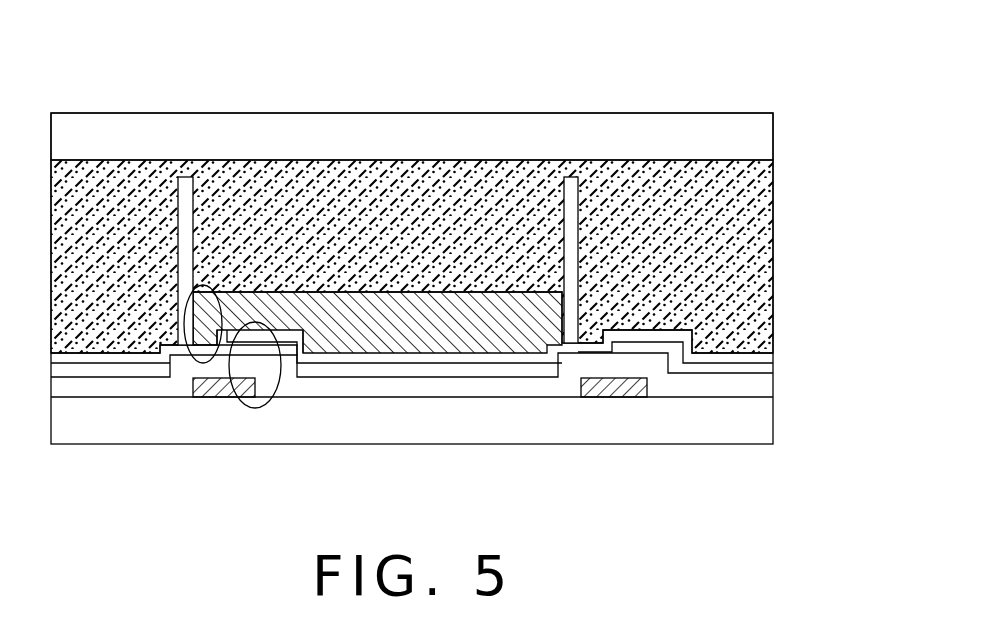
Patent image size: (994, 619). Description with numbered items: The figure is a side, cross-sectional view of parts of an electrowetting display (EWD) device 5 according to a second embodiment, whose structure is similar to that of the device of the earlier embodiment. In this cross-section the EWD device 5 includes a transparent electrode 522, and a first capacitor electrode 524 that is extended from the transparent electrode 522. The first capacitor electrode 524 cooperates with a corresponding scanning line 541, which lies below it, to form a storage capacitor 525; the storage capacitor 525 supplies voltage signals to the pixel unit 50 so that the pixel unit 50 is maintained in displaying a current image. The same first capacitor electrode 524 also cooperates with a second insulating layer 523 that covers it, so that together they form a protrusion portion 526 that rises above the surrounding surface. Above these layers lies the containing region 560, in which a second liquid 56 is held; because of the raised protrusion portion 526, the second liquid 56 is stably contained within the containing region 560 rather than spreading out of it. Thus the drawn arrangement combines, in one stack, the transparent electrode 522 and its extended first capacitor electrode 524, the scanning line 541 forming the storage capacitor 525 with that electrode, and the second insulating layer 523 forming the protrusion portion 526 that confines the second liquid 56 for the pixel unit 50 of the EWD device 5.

The EWD device 5 is at (372, 36).
The pixel unit 50 is at (539, 106).
The second liquid 56 is at (447, 326).
The containing region 560 is at (207, 287).
The protrusion portion 526 is at (289, 322).
The second insulating layer 523 is at (766, 357).
The transparent electrode 522 is at (486, 366).
The first capacitor electrode 524 is at (288, 350).
The storage capacitor 525 is at (281, 407).
The scanning line 541 is at (216, 398).